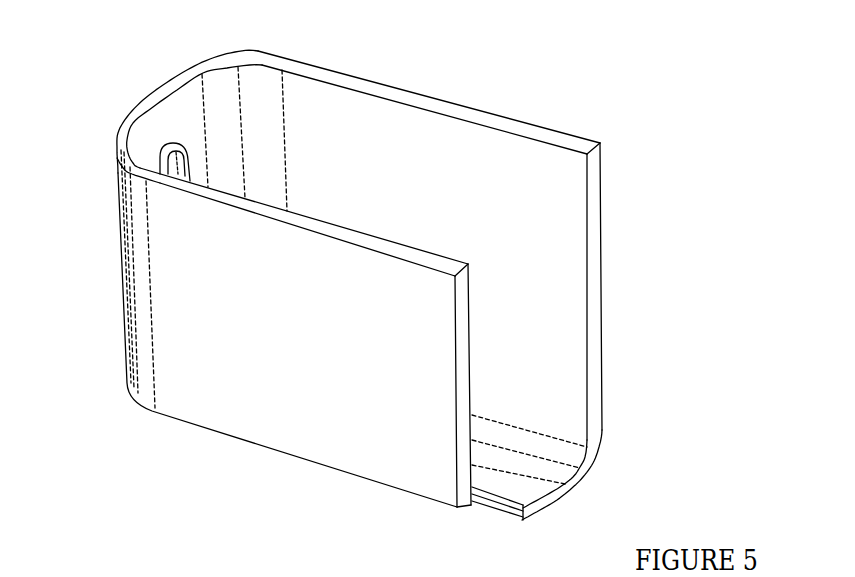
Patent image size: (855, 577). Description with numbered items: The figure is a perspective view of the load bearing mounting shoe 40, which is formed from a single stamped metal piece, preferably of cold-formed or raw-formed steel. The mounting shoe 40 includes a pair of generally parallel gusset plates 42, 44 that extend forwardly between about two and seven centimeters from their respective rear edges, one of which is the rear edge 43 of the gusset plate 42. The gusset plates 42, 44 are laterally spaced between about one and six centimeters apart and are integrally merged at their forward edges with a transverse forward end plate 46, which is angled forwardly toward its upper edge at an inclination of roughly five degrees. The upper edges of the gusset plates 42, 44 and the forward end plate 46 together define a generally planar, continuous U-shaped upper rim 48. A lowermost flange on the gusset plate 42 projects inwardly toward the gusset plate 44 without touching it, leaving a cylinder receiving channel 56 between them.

The mounting shoe 40 is at (622, 358).
The gusset plate 42 is at (532, 197).
The rear edge 43 is at (595, 270).
The gusset plate 44 is at (257, 367).
The forward end plate 46 is at (170, 120).
The upper rim 48 is at (413, 97).
The cylinder receiving channel 56 is at (460, 512).